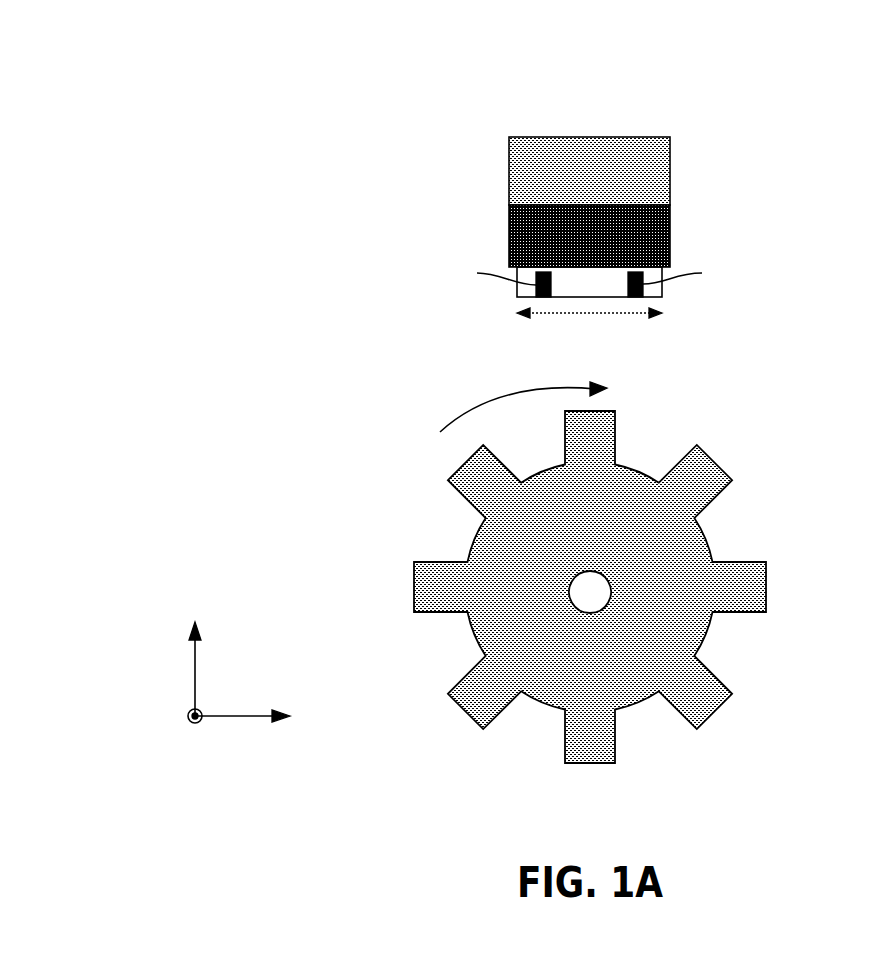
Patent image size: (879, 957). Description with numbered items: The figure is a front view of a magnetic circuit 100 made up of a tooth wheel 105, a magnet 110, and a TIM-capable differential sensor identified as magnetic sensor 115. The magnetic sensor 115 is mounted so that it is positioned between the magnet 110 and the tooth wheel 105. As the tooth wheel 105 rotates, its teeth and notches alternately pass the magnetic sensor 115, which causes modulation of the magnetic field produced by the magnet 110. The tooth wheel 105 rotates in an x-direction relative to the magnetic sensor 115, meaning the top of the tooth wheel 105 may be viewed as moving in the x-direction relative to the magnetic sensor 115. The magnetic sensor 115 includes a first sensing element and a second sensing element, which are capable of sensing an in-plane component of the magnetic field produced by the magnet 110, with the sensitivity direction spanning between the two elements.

The magnetic circuit 100 is at (118, 58).
The tooth wheel 105 is at (607, 546).
The magnet 110 is at (607, 191).
The magnetic sensor 115 is at (662, 296).